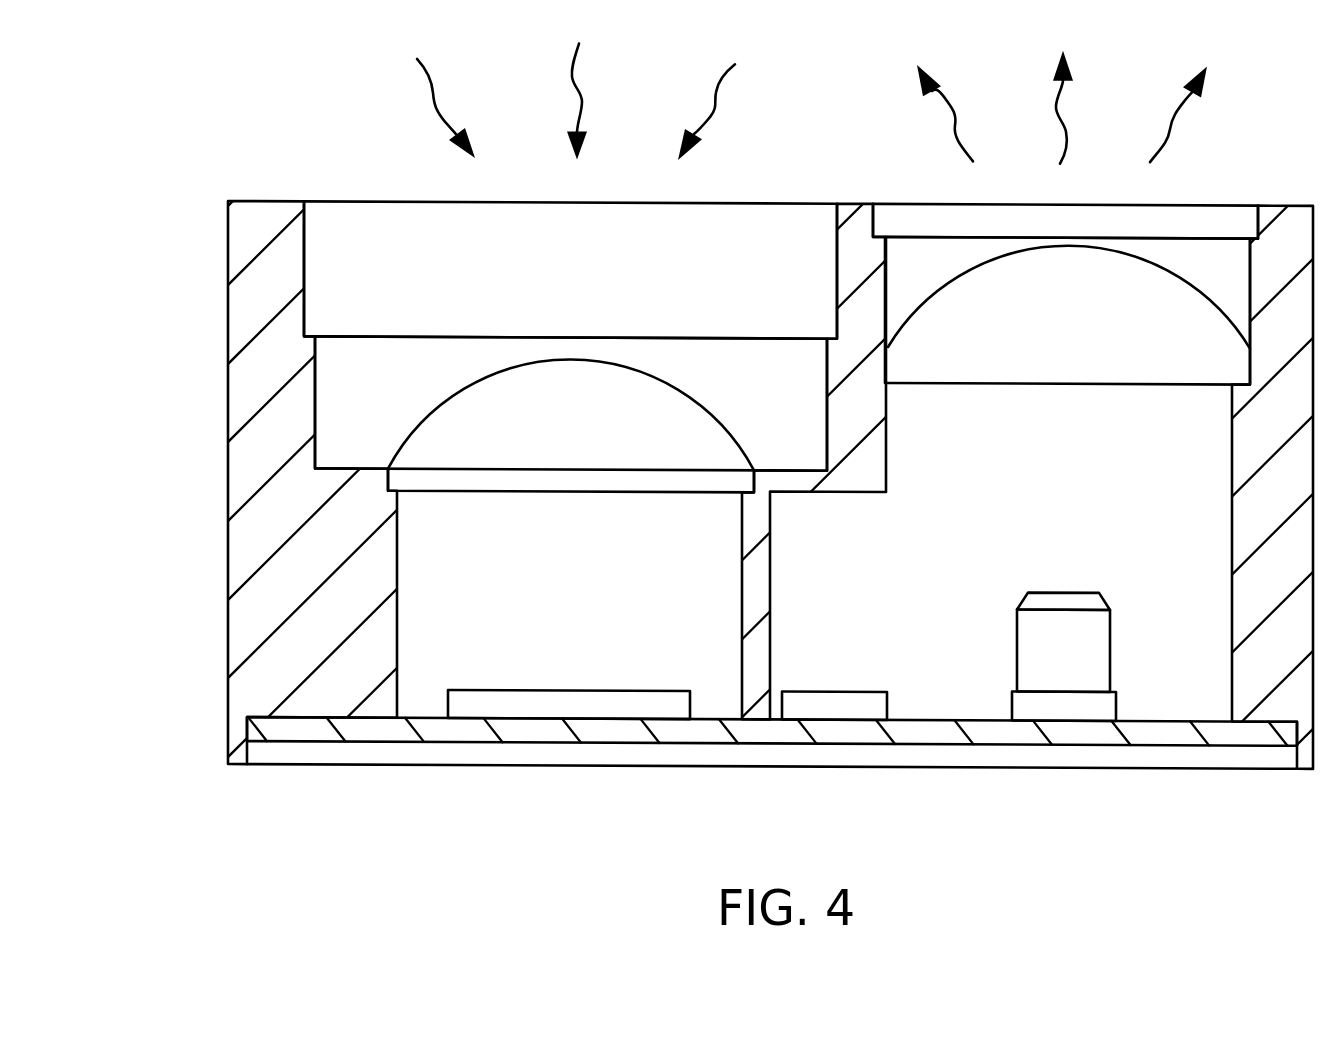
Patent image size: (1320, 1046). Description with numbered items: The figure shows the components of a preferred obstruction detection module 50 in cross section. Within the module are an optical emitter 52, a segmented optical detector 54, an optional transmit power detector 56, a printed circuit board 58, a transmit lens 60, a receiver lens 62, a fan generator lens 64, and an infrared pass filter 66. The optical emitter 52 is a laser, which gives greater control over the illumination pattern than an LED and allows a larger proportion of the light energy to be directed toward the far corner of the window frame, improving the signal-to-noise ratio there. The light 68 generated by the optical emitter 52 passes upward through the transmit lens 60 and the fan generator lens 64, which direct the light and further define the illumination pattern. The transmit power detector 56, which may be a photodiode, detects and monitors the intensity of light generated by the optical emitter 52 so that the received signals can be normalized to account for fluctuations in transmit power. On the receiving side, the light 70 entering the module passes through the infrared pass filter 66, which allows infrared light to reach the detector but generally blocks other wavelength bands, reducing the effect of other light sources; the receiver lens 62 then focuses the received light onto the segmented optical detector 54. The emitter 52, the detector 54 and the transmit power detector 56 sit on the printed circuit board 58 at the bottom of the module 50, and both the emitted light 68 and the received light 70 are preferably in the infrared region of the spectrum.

The obstruction detection module 50 is at (139, 260).
The optical emitter 52 is at (1110, 631).
The segmented optical detector 54 is at (623, 689).
The transmit power detector 56 is at (847, 689).
The printed circuit board 58 is at (1143, 717).
The transmit lens 60 is at (1054, 338).
The receiver lens 62 is at (554, 442).
The fan generator lens 64 is at (1247, 201).
The infrared pass filter 66 is at (554, 286).
The light generated by the optical emitter 68 is at (1181, 112).
The light received by the segmented optical detector 70 is at (433, 95).